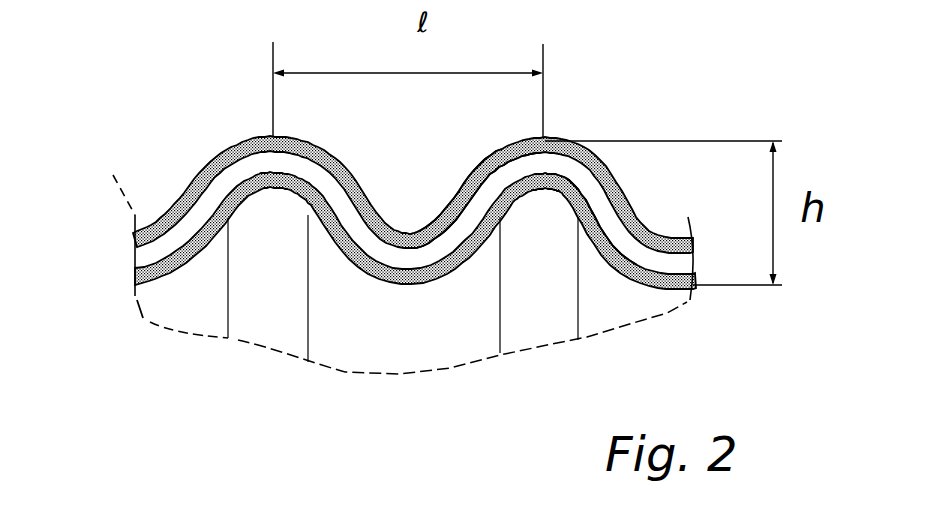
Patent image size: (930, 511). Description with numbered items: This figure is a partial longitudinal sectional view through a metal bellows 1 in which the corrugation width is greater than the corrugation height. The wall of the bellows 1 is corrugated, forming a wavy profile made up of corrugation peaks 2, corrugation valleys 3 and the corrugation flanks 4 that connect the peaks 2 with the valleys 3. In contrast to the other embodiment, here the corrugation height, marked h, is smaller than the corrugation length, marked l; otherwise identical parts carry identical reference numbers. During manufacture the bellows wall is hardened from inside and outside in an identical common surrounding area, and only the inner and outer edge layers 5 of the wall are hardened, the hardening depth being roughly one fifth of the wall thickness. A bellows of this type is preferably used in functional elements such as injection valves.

The metal bellows 1 is at (148, 146).
The corrugation peaks 2 is at (268, 137).
The corrugation valleys 3 is at (423, 285).
The corrugation flanks 4 is at (450, 196).
The inner and outer edge layers 5 is at (603, 221).